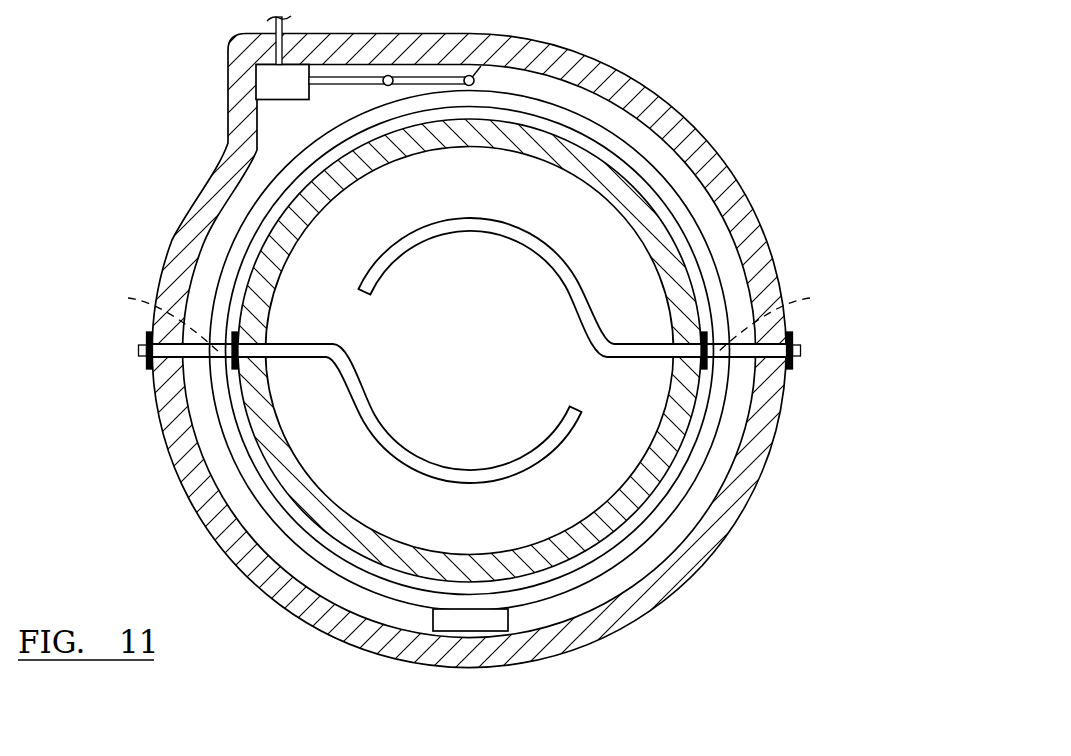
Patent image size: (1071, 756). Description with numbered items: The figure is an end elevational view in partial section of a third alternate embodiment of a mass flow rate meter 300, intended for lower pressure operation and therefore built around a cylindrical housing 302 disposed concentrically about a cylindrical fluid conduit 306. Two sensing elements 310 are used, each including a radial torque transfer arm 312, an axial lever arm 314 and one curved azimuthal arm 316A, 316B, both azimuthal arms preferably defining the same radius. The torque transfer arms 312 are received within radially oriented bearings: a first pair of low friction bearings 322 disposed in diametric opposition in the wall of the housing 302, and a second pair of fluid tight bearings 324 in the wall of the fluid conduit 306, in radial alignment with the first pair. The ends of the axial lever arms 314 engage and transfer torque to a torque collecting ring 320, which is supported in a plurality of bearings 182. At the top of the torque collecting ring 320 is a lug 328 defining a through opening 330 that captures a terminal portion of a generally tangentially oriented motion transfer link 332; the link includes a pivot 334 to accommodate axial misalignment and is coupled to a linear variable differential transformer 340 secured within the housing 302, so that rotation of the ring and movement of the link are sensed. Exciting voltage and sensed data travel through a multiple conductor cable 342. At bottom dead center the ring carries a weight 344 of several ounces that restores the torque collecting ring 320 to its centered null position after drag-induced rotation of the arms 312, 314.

The mass flow rate meter 300 is at (535, 378).
The housing 302 is at (743, 200).
The fluid conduit 306 is at (668, 450).
The sensing element 310 is at (140, 347).
The torque transfer arm 312 is at (198, 360).
The axial lever arm 314 is at (482, 315).
The azimuthal arm 316A is at (527, 250).
The azimuthal arm 316B is at (537, 447).
The torque collecting ring 320 is at (598, 133).
The low friction bearings 322 is at (150, 366).
The fluid tight bearings 324 is at (232, 343).
The lug 328 is at (486, 66).
The through opening 330 is at (478, 78).
The motion transfer link 332 is at (433, 84).
The pivot 334 is at (388, 85).
The linear variable differential transformer 340 is at (275, 88).
The multiple conductor cable 342 is at (271, 21).
The weight 344 is at (438, 618).
The bearings 182 is at (320, 532).